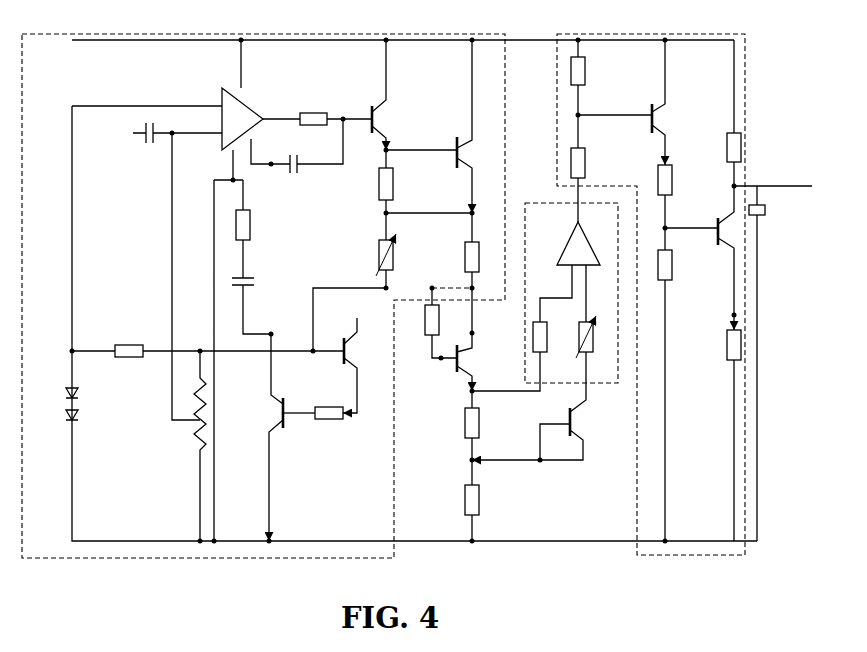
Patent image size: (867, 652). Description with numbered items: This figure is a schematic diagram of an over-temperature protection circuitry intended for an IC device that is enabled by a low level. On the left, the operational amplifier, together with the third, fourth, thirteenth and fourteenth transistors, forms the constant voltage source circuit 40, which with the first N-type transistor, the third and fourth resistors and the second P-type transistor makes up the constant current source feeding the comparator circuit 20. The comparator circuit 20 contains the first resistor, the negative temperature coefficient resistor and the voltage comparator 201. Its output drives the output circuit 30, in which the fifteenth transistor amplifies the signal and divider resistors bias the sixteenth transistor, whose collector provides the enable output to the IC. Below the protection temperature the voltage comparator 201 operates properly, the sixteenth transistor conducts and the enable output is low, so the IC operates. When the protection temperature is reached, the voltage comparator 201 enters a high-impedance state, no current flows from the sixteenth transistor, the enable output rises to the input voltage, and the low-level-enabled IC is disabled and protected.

The constant voltage source circuit 40 is at (313, 34).
The output circuit 30 is at (747, 120).
The comparator circuit 20 is at (618, 385).
The voltage comparator 201 is at (572, 238).